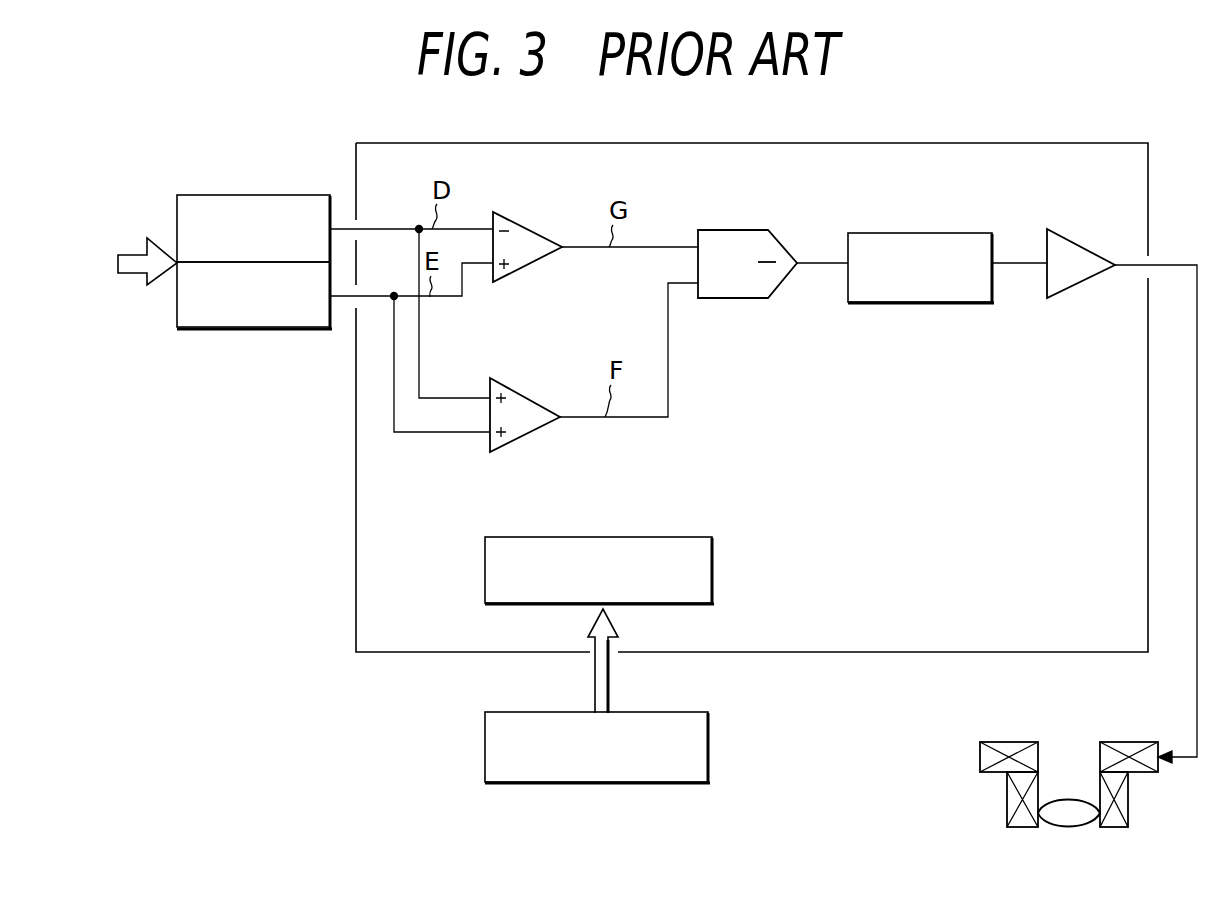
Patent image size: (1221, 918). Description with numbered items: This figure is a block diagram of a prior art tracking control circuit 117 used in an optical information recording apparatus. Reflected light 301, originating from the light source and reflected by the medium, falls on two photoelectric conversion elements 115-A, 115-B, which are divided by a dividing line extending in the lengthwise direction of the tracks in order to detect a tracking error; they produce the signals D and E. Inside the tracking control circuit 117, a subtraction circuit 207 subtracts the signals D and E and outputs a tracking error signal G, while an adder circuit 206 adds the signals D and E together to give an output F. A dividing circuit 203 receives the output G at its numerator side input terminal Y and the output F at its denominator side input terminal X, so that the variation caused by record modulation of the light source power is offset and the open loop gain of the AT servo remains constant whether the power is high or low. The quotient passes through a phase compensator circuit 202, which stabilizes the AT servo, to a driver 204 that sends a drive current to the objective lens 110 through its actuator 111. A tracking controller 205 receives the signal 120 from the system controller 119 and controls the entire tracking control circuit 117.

The photoelectric conversion element 115-A is at (177, 200).
The photoelectric conversion element 115-B is at (177, 322).
The reflected light 301 is at (124, 278).
The subtraction circuit 207 is at (522, 229).
The adder circuit 206 is at (525, 390).
The dividing circuit 203 is at (733, 230).
The phase compensator circuit 202 is at (924, 233).
The driver 204 is at (1068, 233).
The tracking control circuit 117 is at (1148, 193).
The tracking controller 205 is at (712, 573).
The signal 120 is at (608, 692).
The system controller 119 is at (708, 752).
The objective lens 110 is at (1062, 797).
The actuator 111 is at (1115, 742).